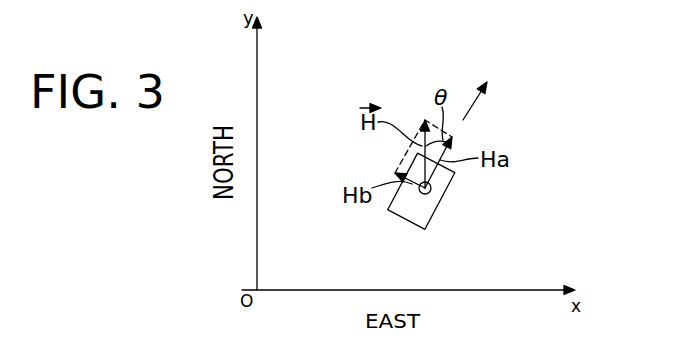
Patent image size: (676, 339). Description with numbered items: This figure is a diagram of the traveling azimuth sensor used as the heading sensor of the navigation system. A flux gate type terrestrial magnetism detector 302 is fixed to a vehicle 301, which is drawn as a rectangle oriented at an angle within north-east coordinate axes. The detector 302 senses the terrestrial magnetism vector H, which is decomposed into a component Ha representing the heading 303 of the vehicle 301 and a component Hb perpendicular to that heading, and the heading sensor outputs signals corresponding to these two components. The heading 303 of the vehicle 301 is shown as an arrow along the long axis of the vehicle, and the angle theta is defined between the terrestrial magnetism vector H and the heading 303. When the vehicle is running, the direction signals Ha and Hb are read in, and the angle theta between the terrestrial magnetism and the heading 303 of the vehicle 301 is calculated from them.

The vehicle 301 is at (453, 181).
The flux gate type terrestrial magnetism detector 302 is at (432, 192).
The heading 303 is at (473, 105).